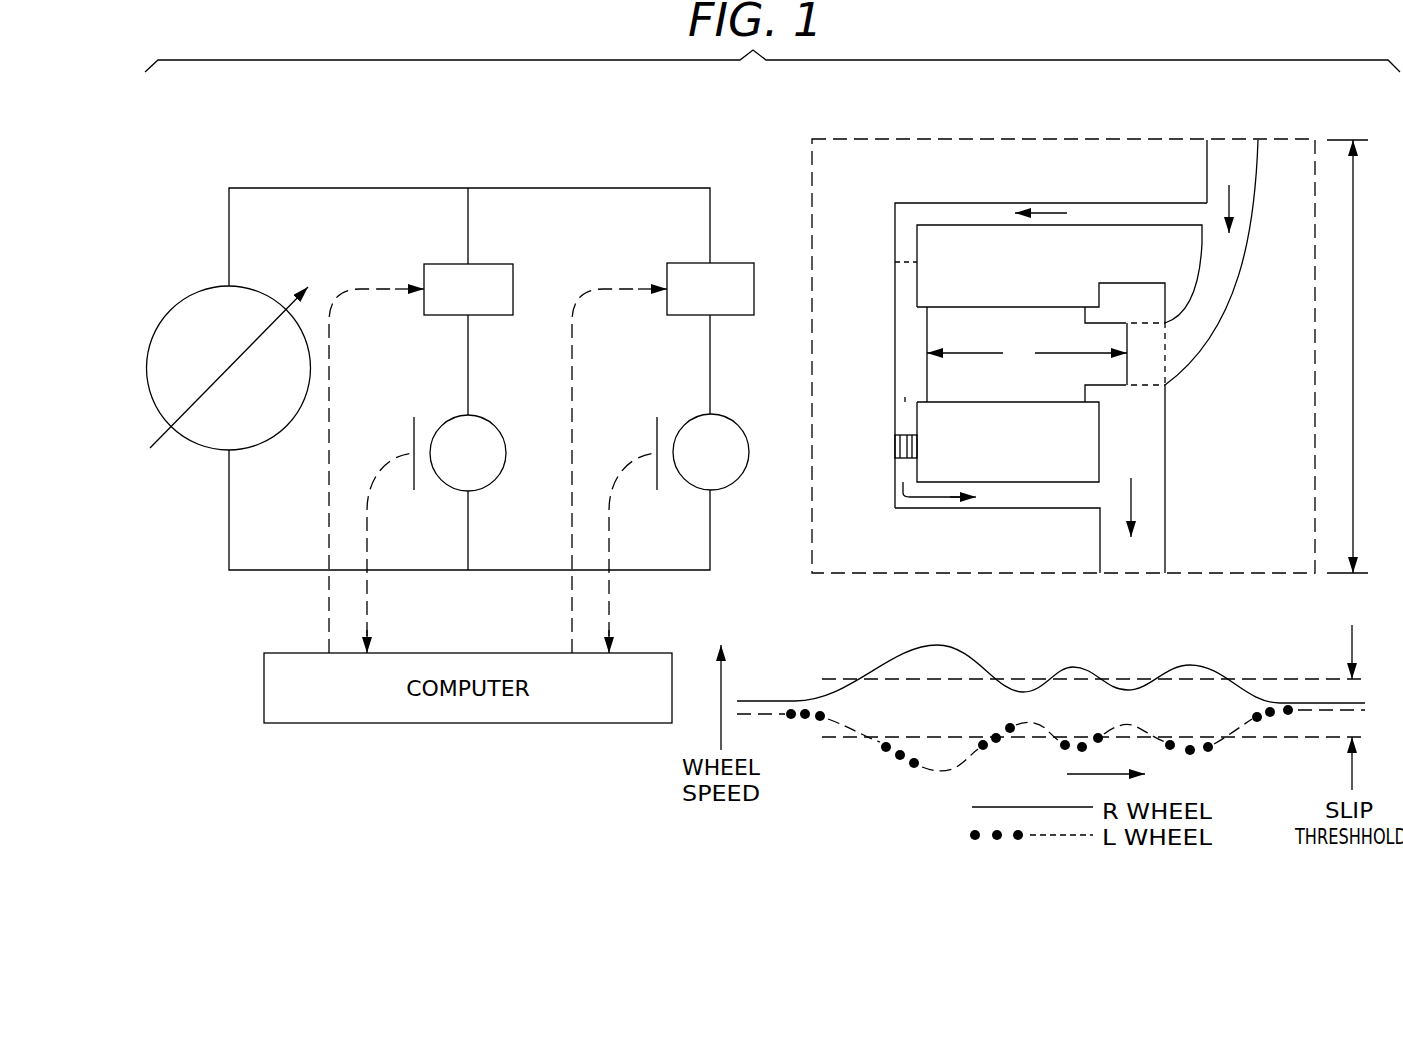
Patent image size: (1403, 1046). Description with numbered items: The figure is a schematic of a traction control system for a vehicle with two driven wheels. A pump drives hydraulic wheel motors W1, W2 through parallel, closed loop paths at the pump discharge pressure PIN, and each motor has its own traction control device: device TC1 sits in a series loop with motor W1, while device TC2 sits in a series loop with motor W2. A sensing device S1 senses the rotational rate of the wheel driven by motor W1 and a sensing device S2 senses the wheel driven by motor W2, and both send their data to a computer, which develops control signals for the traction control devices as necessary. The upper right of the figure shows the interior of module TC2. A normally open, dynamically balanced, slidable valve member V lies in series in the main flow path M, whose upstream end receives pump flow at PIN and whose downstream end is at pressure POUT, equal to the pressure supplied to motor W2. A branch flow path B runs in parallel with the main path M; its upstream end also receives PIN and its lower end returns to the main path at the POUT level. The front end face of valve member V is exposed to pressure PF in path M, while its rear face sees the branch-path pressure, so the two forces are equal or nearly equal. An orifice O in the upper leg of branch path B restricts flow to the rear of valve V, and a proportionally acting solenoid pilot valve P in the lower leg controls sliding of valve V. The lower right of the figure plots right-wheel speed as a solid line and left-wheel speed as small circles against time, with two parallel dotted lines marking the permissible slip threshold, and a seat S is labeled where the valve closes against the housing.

The traction control device TC1 is at (421, 458).
The traction control device TC2 is at (830, 138).
The sensing device S1 is at (396, 521).
The sensing device S2 is at (639, 521).
The hydraulic wheel motor W1 is at (468, 453).
The hydraulic wheel motor W2 is at (711, 452).
The inlet pressure Pin PIN is at (1240, 139).
The output pressure Pout POUT is at (1132, 548).
The orifice O is at (897, 262).
The pilot valve P is at (906, 327).
The branch flow path B is at (905, 397).
The slidable valve member V is at (1027, 353).
The main flow path M is at (1229, 291).
The pressure Pf PF is at (1183, 358).
The seat S is at (1165, 385).